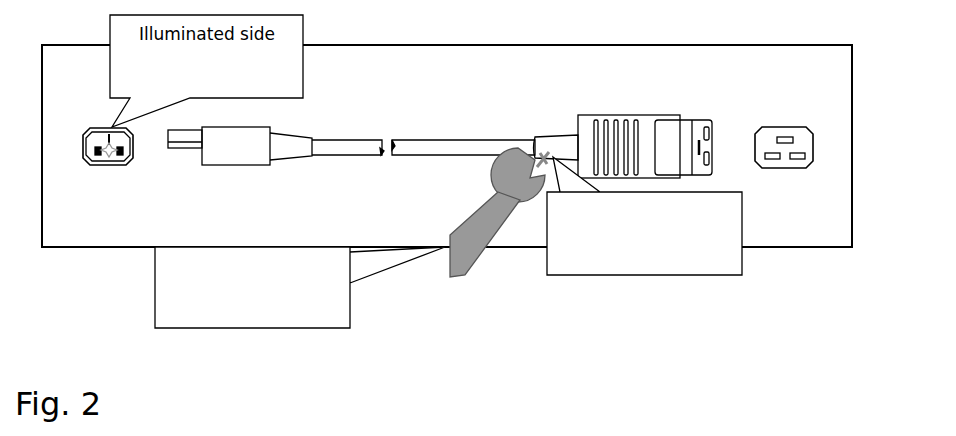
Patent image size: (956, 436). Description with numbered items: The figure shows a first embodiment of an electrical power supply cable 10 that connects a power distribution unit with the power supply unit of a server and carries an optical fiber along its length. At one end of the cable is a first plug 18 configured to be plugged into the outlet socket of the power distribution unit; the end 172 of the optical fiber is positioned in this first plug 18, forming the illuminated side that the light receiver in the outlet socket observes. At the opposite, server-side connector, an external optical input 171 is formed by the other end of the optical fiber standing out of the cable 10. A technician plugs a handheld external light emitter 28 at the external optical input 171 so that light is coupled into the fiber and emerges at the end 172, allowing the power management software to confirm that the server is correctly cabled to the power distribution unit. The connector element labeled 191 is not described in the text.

The electrical power supply cable 10 is at (363, 213).
The first plug 18 is at (133, 153).
The end of the optical fiber 172 is at (107, 167).
The connector with optical slots 191 is at (618, 120).
The external optical input 171 is at (639, 213).
The external light emitter 28 is at (350, 238).